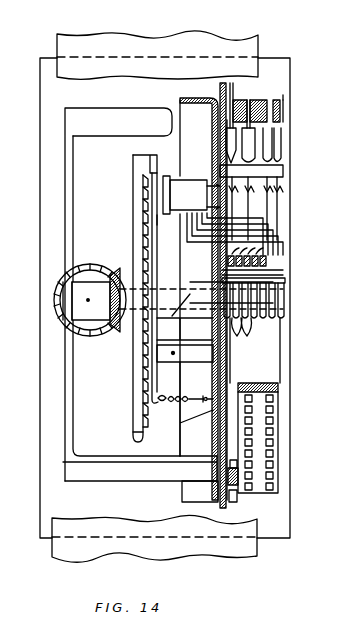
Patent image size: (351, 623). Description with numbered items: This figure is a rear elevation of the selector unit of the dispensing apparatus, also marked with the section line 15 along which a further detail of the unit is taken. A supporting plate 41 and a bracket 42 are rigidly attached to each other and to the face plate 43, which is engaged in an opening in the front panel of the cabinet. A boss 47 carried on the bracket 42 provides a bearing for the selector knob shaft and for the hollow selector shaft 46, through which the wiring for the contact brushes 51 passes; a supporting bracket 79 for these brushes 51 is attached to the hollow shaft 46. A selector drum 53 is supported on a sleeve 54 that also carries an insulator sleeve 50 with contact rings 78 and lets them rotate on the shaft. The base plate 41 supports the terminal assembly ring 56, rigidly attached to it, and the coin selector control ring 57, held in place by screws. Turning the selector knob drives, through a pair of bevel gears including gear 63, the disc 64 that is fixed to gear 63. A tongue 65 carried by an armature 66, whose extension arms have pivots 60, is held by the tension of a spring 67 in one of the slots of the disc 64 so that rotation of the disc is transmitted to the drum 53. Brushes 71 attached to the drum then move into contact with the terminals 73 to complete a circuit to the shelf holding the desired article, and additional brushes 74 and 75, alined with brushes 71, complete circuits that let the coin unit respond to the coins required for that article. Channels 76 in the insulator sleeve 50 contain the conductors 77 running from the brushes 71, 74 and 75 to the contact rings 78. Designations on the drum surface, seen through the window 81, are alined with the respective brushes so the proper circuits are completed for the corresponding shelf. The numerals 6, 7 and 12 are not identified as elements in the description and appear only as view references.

The plate 6 is at (283, 95).
The plate 7 is at (284, 101).
The insulating block 12 is at (259, 100).
The line 15— 15 is at (288, 55).
The supporting plate 41 is at (219, 89).
The bracket 42 is at (136, 486).
The face plate 43 is at (40, 372).
The hollow selector shaft 46 is at (185, 342).
The boss 47 is at (80, 277).
The insulator sleeve 50 is at (253, 329).
The contact brushes 51 is at (251, 253).
The selector drum 53 is at (179, 99).
The sleeve 54 is at (164, 282).
The terminal assembly ring 56 is at (227, 472).
The coin selector control ring 57 is at (280, 420).
The pivots 60 is at (208, 364).
The bevel gear 63 is at (118, 266).
The disc 64 is at (130, 433).
The tongue 65 is at (142, 153).
The armature 66 is at (158, 221).
The spring 67 is at (143, 205).
The brushes 71 is at (191, 195).
The terminals 73 is at (236, 103).
The brush 74 is at (243, 184).
The brush 75 is at (273, 184).
The channels 76 is at (268, 284).
The conductors 77 is at (185, 329).
The contact rings 78 is at (255, 350).
The supporting bracket 79 is at (283, 272).
The window 81 is at (273, 443).